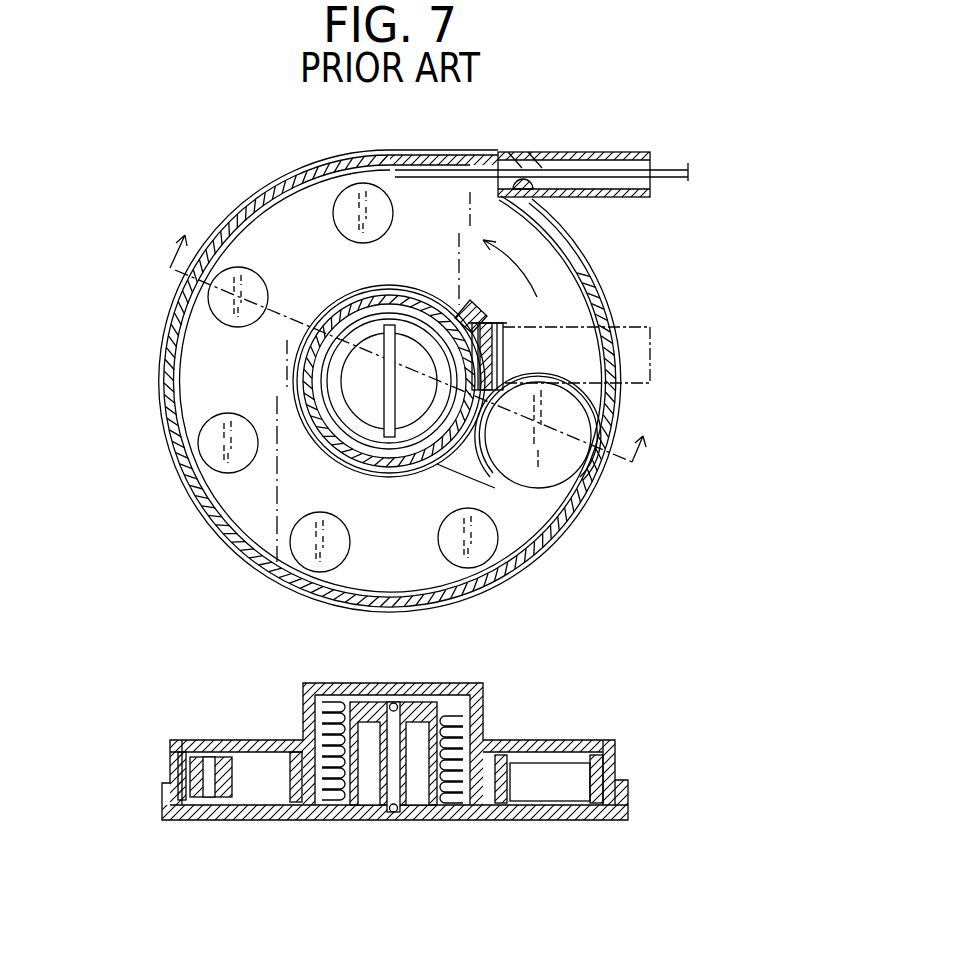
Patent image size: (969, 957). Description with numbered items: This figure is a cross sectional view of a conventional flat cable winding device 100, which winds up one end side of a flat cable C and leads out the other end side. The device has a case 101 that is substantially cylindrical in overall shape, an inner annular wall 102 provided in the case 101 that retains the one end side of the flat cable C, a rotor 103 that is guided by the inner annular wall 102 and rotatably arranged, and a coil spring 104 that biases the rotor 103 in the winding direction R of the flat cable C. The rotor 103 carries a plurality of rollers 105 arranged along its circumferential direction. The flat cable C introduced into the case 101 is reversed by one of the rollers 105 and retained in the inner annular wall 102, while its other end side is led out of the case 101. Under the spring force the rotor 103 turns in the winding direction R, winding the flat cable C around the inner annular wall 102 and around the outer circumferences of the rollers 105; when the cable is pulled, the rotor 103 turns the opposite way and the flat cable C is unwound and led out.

The flat cable winding device 100 is at (237, 162).
The case 101 is at (600, 288).
The inner annular wall 102 is at (395, 470).
The rotor 103 is at (248, 496).
The coil spring 104 is at (453, 803).
The rollers 105 is at (384, 217).
The flat cable C is at (598, 183).
The winding direction R is at (514, 264).